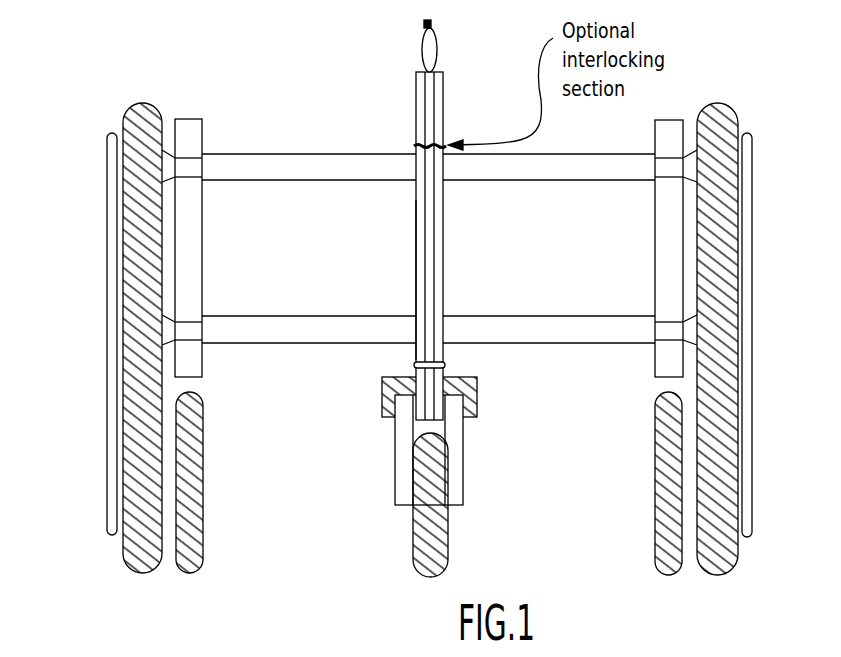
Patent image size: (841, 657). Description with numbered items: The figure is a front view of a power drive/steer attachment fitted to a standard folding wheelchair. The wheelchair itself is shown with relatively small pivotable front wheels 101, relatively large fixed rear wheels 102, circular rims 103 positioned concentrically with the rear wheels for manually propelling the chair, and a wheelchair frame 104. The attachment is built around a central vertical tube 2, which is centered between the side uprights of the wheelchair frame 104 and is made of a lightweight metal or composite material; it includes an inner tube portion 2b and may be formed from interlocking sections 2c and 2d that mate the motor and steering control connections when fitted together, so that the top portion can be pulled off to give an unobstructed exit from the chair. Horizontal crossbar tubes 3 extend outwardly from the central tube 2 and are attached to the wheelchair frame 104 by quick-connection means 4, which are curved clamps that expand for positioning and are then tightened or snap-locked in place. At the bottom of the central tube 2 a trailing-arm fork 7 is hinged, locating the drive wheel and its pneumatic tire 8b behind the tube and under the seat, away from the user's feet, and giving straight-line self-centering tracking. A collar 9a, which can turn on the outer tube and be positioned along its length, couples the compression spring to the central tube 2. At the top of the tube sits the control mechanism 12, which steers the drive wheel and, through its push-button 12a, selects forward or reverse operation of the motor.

The central vertical tube 2 is at (416, 95).
The inner tube portion 2b is at (434, 125).
The interlocking section 2c is at (416, 132).
The interlocking section 2d is at (416, 272).
The horizontal crossbar tube 3 is at (297, 172).
The quick-connection means 4 is at (670, 168).
The fork 7 is at (463, 447).
The tire 8b is at (440, 535).
The collar 9a is at (445, 365).
The control mechanism 12 is at (437, 42).
The push-button switch 12a is at (424, 22).
The front wheels 101 is at (200, 455).
The rear wheels 102 is at (145, 565).
The circular rims 103 is at (107, 245).
The wheelchair frame 104 is at (195, 135).